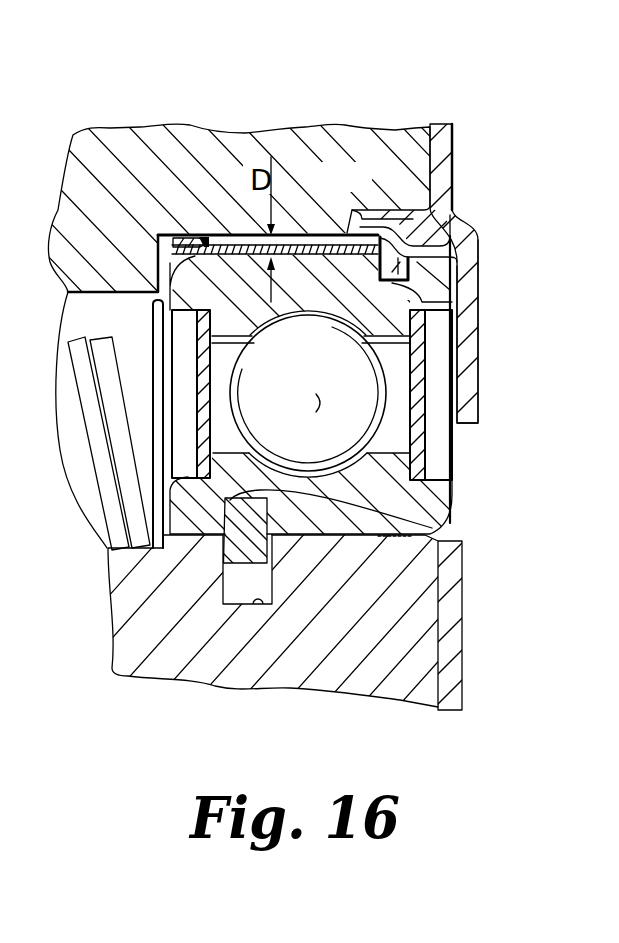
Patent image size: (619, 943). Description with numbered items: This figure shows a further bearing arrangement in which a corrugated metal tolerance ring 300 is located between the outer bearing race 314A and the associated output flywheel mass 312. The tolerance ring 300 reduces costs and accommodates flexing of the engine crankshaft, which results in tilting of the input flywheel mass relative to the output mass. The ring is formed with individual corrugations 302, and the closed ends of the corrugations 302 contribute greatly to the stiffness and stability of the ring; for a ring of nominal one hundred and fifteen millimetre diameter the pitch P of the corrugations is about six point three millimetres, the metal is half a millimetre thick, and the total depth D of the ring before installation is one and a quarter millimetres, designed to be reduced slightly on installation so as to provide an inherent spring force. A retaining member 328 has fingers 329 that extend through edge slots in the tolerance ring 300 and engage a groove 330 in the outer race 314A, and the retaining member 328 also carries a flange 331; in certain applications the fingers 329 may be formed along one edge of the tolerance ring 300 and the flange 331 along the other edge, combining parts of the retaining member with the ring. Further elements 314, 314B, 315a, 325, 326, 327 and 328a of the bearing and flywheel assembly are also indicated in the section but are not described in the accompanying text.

The tolerance ring 300 is at (207, 234).
The corrugations 302 is at (321, 246).
The output flywheel mass 312 is at (303, 136).
The ball 314 is at (327, 373).
The outer bearing race 314A is at (384, 321).
The inner ring 314B is at (430, 494).
The shaft flange 315a is at (448, 682).
The snap ring 325 is at (243, 550).
The gap 326 is at (447, 538).
The groove 327 is at (262, 610).
The retaining member 328 is at (437, 159).
The cap leg 328a is at (470, 398).
The fingers 329 is at (392, 267).
The groove 330 is at (452, 302).
The flange 331 is at (440, 135).